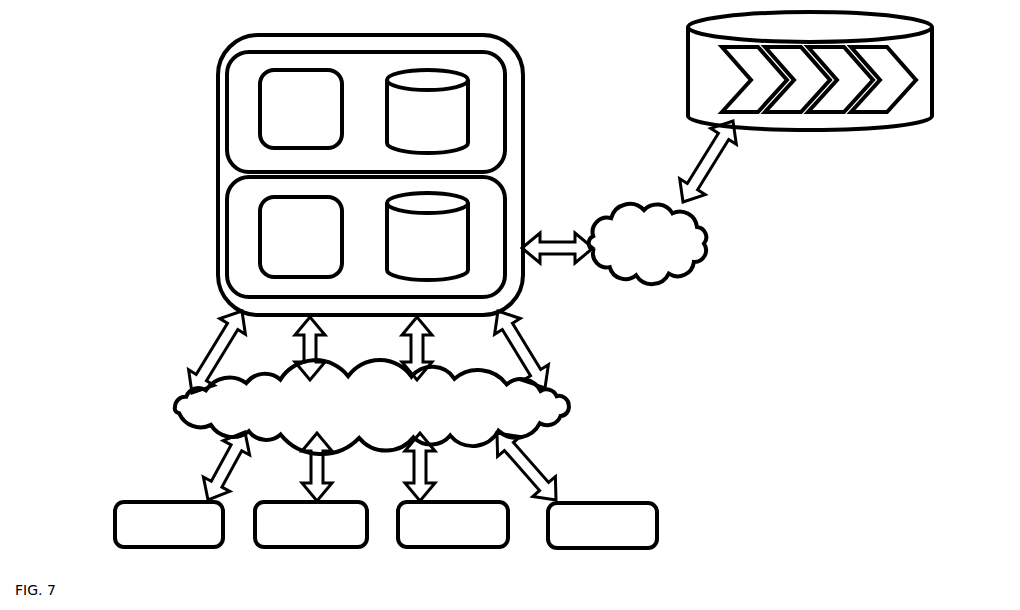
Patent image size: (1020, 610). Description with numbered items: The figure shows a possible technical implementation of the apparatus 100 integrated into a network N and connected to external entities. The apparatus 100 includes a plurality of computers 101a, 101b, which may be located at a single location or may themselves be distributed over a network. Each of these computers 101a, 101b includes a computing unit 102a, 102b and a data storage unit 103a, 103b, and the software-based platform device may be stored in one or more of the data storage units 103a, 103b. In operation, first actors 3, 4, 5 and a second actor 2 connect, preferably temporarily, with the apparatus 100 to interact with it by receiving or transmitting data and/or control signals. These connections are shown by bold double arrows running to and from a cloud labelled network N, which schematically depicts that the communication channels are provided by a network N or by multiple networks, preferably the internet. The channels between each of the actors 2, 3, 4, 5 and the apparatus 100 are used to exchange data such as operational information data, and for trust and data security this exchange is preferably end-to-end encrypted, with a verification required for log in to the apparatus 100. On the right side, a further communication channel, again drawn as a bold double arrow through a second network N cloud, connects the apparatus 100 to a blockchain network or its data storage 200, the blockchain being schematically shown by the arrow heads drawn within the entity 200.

The apparatus 100 is at (226, 46).
The computer 101a is at (275, 112).
The computing unit 102a is at (189, 130).
The data storage unit 103a is at (506, 111).
The computer 101b is at (277, 237).
The computing unit 102b is at (200, 248).
The data storage unit 103b is at (497, 222).
The data storage of a blockchain network 200 is at (842, 140).
The network N is at (491, 346).
The second actor 2 is at (648, 536).
The first actor 3 is at (135, 485).
The first actor 4 is at (305, 548).
The first actor 5 is at (437, 550).